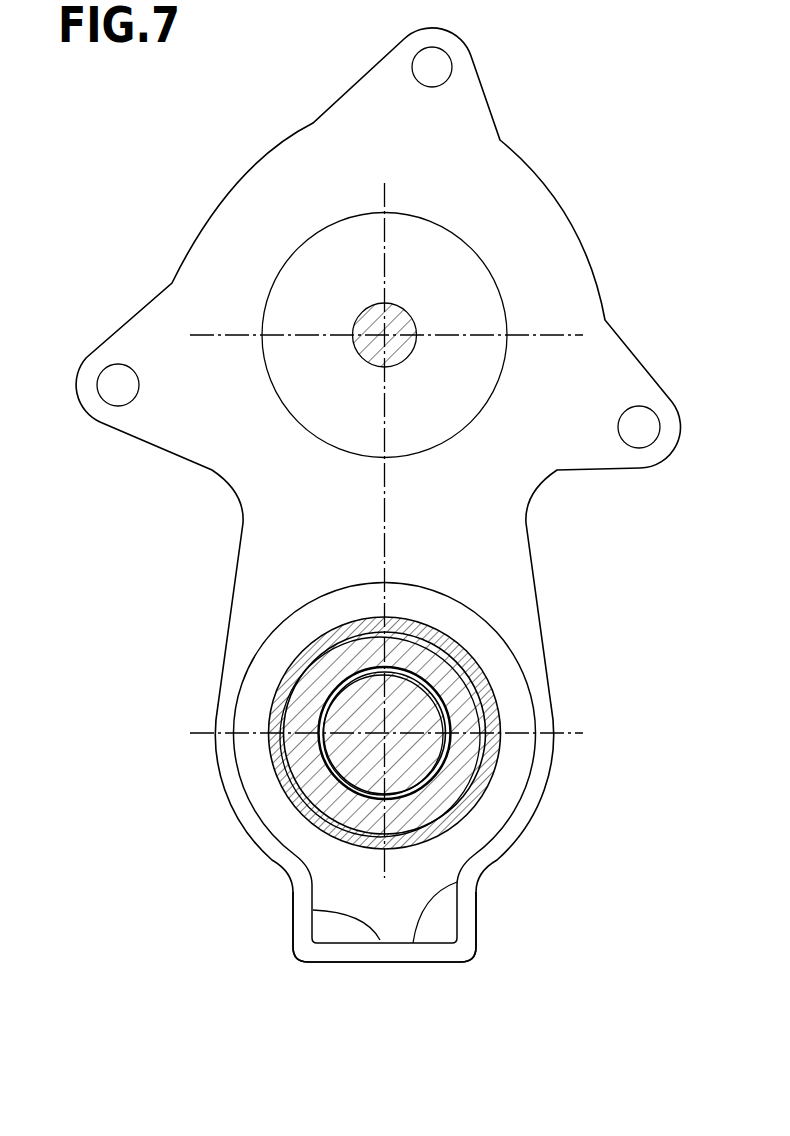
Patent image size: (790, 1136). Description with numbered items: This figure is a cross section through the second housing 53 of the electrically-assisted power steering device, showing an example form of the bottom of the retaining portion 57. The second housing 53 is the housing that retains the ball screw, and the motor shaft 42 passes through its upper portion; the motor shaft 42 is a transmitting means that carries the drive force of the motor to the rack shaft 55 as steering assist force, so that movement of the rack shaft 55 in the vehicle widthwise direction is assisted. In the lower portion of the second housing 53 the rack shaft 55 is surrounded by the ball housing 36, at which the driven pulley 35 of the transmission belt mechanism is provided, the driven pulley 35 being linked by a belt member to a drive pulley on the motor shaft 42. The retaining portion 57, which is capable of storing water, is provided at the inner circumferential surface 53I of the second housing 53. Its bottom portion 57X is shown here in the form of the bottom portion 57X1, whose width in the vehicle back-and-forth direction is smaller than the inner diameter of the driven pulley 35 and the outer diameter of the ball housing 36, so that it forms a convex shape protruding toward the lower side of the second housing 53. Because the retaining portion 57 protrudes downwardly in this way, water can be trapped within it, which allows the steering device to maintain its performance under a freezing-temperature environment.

The second housing 53 is at (352, 166).
The motor shaft 42 is at (375, 327).
The driven pulley 35 is at (290, 658).
The ball housing 36 is at (307, 700).
The rack shaft 55 is at (355, 755).
The inner circumferential surface 53I is at (457, 882).
The retaining portion 57 is at (440, 922).
The bottom portion 57X is at (313, 910).
The bottom portion 57X1 is at (317, 912).